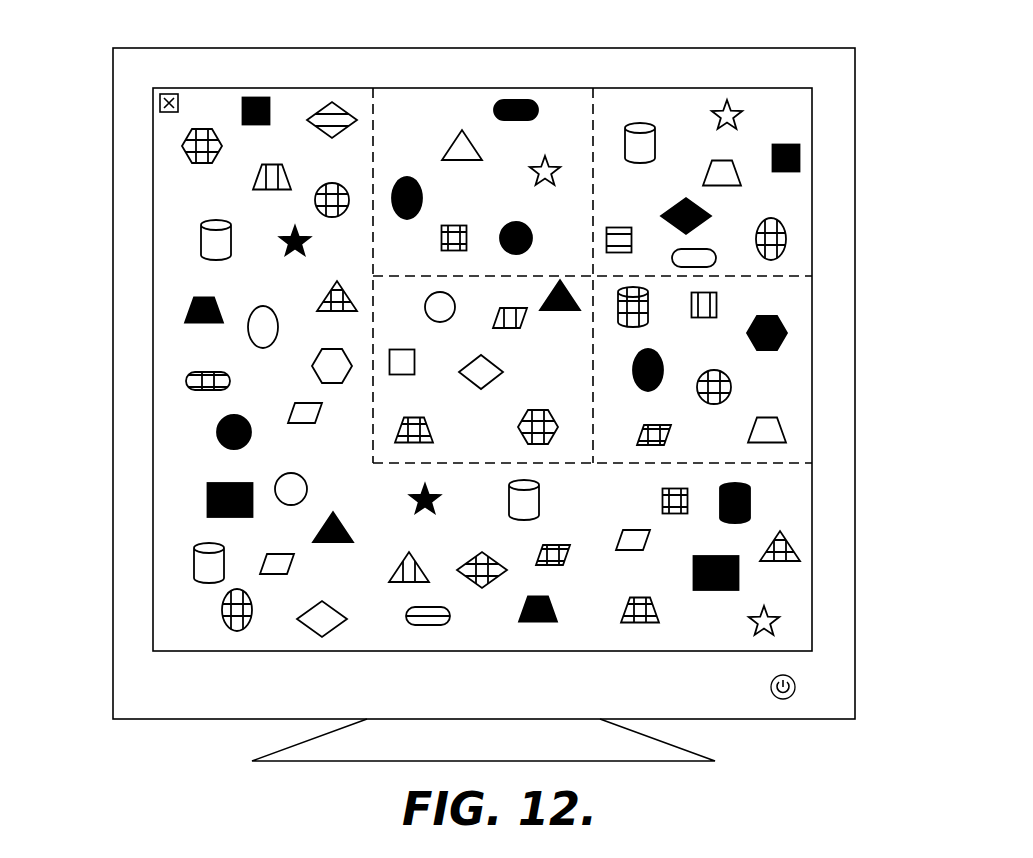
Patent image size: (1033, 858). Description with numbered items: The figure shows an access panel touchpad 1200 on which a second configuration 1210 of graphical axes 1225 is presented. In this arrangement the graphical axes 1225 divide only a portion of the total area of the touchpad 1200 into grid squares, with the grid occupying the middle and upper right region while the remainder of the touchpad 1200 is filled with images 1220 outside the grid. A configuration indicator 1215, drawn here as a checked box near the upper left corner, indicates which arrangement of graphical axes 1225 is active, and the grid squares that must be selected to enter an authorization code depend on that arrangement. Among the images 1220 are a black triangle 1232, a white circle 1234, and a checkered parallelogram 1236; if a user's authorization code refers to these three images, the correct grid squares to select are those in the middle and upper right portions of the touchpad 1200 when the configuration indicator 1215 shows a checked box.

The access panel touchpad 1200 is at (90, 62).
The second configuration 1210 is at (507, 88).
The configuration indicator 1215 is at (172, 92).
The images 1220 is at (741, 119).
The graphical axes 1225 is at (593, 207).
The black triangle 1232 is at (560, 311).
The white circle 1234 is at (440, 322).
The checkered parallelogram 1236 is at (640, 437).